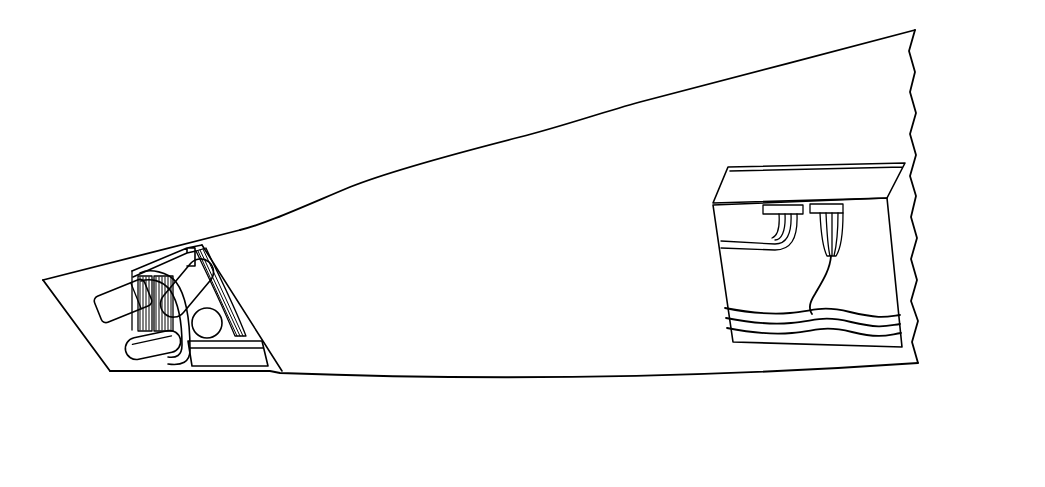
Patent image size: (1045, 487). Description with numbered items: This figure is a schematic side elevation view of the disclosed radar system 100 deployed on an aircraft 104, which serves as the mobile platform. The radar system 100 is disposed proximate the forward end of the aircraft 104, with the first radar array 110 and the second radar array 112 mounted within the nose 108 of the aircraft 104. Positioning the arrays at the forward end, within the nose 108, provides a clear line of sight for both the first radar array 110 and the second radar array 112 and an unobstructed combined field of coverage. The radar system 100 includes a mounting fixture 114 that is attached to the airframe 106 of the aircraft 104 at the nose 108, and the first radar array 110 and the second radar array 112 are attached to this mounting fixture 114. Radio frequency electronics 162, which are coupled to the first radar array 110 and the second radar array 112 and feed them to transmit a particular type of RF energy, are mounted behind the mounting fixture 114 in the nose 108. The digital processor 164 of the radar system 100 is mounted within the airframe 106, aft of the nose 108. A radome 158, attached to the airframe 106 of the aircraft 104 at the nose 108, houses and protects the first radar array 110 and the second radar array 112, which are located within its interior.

The radar system 100 is at (122, 187).
The aircraft 104 is at (660, 84).
The airframe 106 is at (480, 162).
The radome 158 is at (83, 265).
The nose 108 is at (190, 246).
The first radar array 110 is at (148, 353).
The second radar array 112 is at (100, 308).
The mounting fixture 114 is at (213, 362).
The radio frequency electronics 162 is at (203, 301).
The digital processor 164 is at (757, 287).